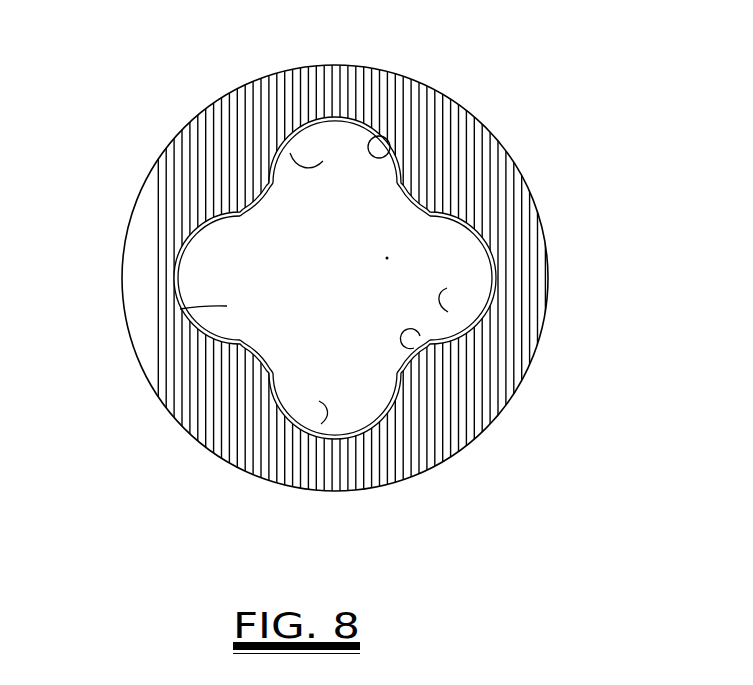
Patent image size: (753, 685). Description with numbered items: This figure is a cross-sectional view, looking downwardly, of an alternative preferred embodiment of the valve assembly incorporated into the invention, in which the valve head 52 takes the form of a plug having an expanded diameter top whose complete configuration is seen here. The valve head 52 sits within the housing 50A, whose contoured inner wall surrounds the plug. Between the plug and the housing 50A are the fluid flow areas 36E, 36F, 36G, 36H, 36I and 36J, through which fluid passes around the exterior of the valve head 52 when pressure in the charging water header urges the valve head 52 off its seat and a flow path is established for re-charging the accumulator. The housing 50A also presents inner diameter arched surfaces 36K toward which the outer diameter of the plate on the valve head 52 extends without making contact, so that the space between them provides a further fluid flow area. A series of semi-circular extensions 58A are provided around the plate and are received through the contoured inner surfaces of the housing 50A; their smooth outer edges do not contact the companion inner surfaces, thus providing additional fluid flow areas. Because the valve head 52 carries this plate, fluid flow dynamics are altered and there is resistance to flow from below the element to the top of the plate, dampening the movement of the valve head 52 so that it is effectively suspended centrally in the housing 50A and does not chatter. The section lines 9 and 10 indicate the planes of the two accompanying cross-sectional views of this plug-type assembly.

The housing 50A is at (182, 190).
The valve head 52 is at (327, 120).
The fluid flow area 36E is at (180, 270).
The fluid flow area 36F is at (350, 120).
The fluid flow area 36G is at (355, 437).
The fluid flow area 36H is at (488, 258).
The fluid flow area 36I is at (257, 193).
The fluid flow area 36J is at (428, 341).
The inner diameter arched surface 36K is at (426, 213).
The semi-circular extension 58A is at (290, 153).
The section line 9- 9 is at (570, 287).
The section line 10- 10 is at (500, 125).